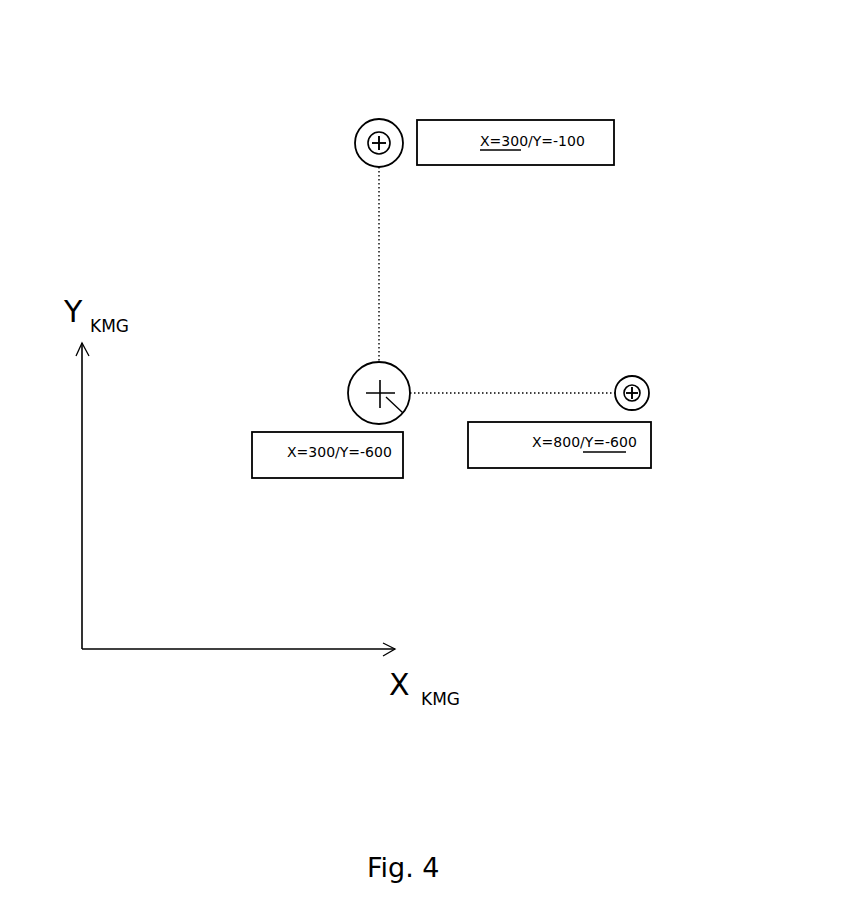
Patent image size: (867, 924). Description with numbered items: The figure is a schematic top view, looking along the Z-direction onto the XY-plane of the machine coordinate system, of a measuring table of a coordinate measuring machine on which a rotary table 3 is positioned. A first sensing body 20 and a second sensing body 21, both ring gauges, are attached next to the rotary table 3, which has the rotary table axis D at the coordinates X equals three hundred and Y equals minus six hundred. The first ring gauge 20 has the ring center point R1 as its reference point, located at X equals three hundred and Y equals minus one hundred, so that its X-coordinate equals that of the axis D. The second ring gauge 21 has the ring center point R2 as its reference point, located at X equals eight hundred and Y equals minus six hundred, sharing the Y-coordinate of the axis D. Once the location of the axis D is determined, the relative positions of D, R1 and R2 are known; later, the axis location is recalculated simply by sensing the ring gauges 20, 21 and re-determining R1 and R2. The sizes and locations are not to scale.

The first sensing body 20 is at (382, 125).
The ring center point R1 is at (372, 127).
The rotary table 3 is at (364, 378).
The rotary table axis D is at (386, 397).
The second sensing body 21 is at (655, 393).
The ring center point R2 is at (640, 397).